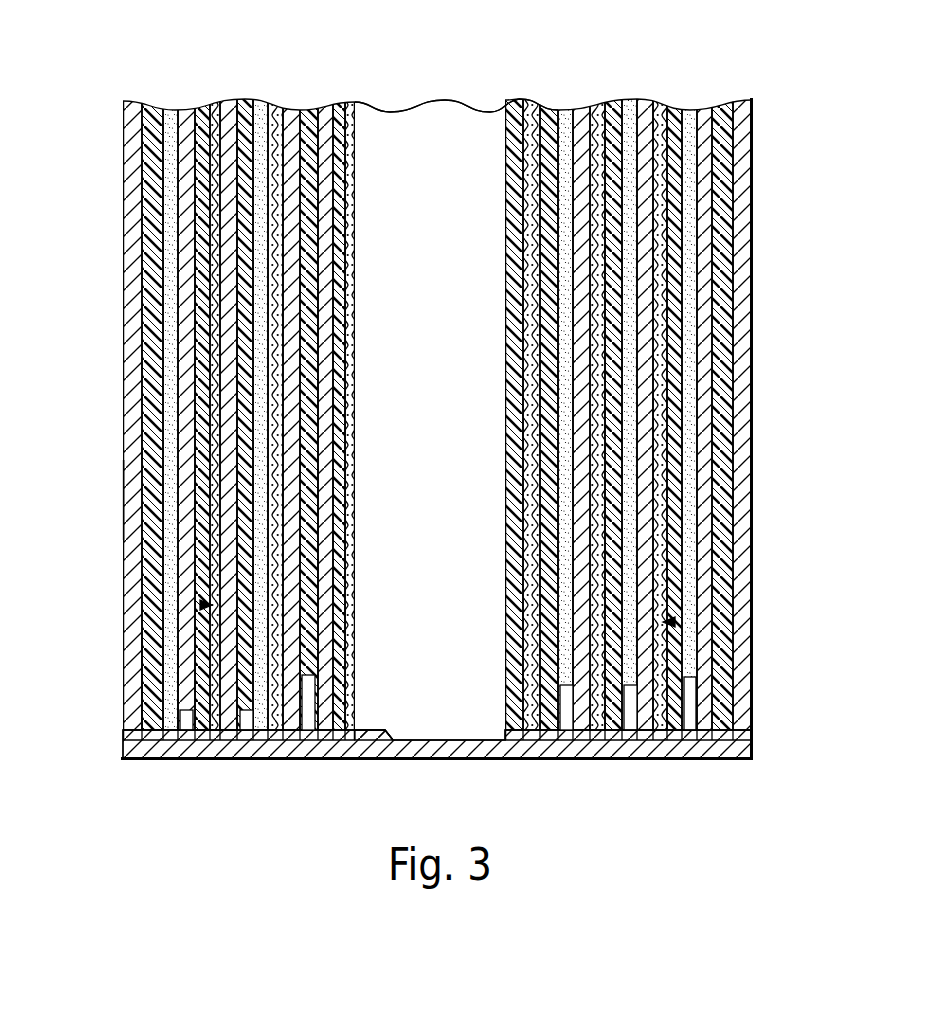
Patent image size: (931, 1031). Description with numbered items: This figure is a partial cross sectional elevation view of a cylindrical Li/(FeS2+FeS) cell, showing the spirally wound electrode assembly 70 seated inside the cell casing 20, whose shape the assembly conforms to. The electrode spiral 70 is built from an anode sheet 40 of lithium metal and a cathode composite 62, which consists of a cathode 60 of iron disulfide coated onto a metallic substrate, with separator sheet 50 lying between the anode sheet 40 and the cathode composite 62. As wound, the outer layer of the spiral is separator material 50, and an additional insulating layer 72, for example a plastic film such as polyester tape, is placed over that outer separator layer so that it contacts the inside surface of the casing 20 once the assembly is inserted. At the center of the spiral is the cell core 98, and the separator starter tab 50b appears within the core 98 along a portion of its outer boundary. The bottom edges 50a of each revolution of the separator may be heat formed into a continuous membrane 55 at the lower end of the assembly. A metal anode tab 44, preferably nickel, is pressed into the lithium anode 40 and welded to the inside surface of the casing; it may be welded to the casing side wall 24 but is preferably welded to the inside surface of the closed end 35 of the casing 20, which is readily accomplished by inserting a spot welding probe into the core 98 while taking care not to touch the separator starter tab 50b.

The cell casing 20 is at (123, 228).
The casing side wall 24 is at (123, 500).
The closed end of casing 35 is at (607, 760).
The anode sheet 40 is at (178, 405).
The anode tab 44 is at (367, 738).
The separator sheet 50 is at (190, 490).
The bottom edges of separator 50a is at (232, 732).
The separator starter tab 50b is at (515, 100).
The continuous membrane 55 is at (304, 733).
The cathode 60 is at (208, 540).
The cathode composite 62 is at (210, 605).
The spirally wound electrode assembly 70 is at (165, 668).
The insulating layer 72 is at (148, 310).
The cell core 98 is at (443, 391).